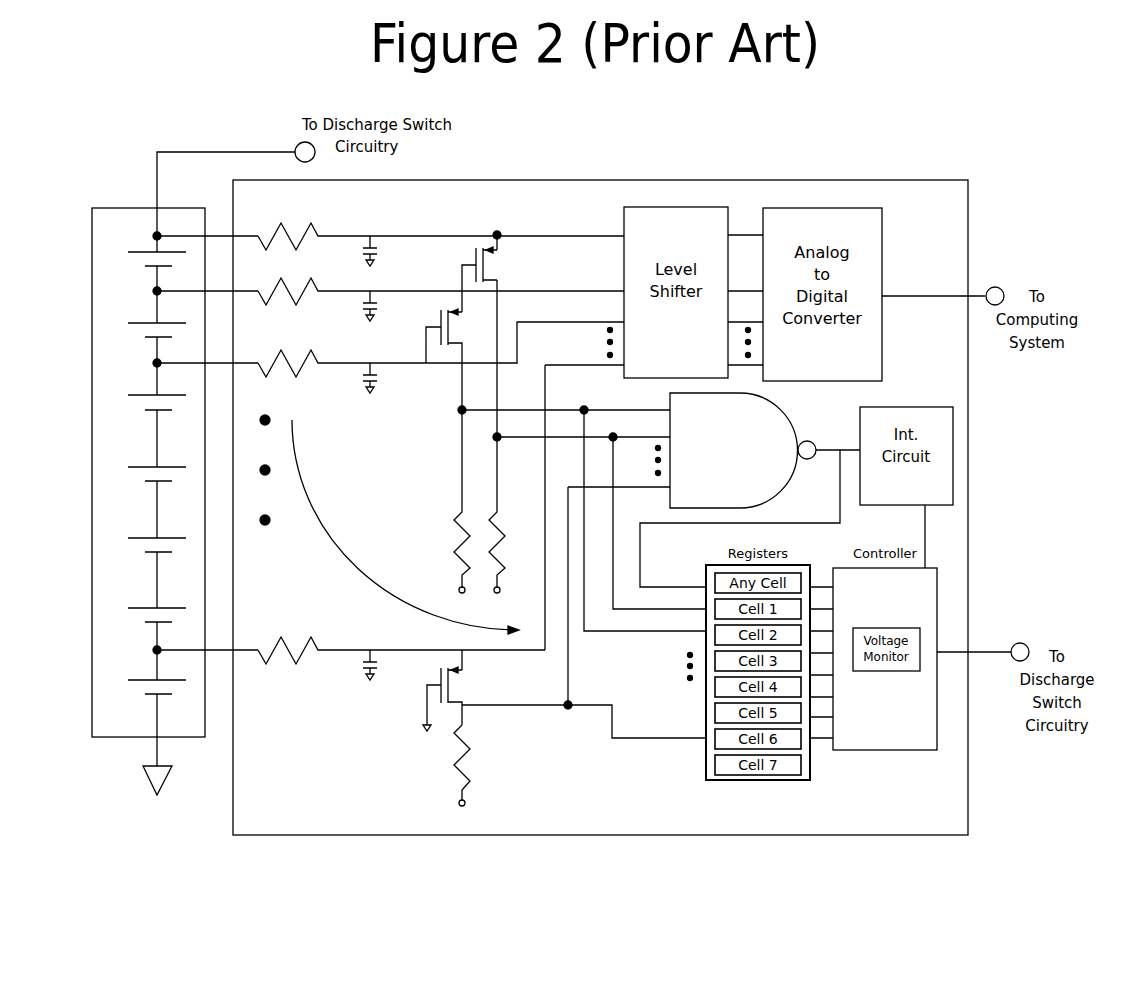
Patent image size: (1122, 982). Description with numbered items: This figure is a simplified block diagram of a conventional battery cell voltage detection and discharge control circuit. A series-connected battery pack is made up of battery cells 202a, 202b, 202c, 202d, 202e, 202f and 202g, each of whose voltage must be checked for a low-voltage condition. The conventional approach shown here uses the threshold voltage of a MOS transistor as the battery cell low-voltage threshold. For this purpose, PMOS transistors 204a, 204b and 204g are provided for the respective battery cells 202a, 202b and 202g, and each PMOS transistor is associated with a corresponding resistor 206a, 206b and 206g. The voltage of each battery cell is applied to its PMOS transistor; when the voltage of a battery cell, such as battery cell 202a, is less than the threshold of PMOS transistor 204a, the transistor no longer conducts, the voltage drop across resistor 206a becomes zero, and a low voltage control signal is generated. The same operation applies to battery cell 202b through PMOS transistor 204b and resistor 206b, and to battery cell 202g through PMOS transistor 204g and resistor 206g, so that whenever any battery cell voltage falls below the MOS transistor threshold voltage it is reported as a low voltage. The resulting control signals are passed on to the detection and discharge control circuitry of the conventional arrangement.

The battery cell 202a is at (152, 252).
The battery cell 202b is at (152, 323).
The battery cell 202c is at (152, 395).
The battery cell 202d is at (152, 467).
The battery cell 202e is at (152, 538).
The battery cell 202f is at (152, 608).
The battery cell 202g is at (152, 680).
The PMOS transistor 204a is at (512, 258).
The PMOS transistor 204b is at (412, 337).
The PMOS transistor 204g is at (477, 682).
The resistor 206a is at (533, 498).
The resistor 206b is at (440, 514).
The resistor 206g is at (513, 748).